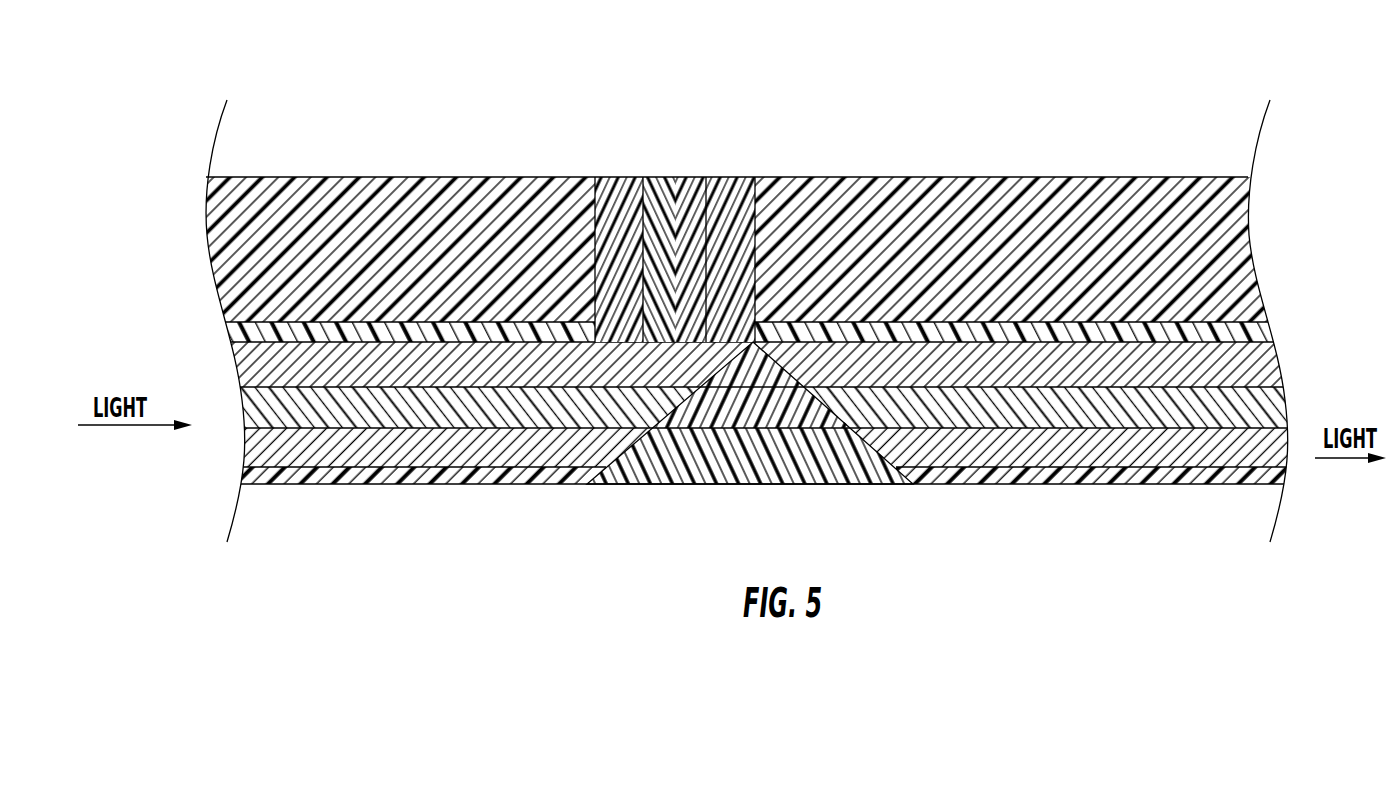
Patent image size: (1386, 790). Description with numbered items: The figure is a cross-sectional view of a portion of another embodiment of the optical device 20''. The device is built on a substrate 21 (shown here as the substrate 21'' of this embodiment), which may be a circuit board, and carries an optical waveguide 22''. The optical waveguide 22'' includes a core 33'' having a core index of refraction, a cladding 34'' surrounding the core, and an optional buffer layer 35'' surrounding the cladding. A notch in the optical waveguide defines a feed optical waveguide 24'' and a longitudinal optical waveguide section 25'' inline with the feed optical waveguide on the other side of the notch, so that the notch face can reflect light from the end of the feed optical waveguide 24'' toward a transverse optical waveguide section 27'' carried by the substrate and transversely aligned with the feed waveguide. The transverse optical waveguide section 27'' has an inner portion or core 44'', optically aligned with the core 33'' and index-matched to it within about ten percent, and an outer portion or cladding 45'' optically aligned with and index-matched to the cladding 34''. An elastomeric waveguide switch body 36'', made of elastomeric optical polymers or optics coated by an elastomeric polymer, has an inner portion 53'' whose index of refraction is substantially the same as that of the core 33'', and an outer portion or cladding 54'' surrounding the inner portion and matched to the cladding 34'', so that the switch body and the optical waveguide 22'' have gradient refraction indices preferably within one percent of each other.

The optical device 20'' is at (747, 284).
The substrate 21 is at (392, 218).
The substrate 21'' is at (1027, 218).
The optical waveguide 22'' is at (192, 321).
The feed optical waveguide 24'' is at (398, 495).
The longitudinal optical waveguide section 25'' is at (1098, 534).
The transverse optical waveguide section 27'' is at (698, 211).
The core 33'' is at (767, 407).
The cladding 34'' is at (767, 447).
The buffer layer 35'' is at (766, 453).
The elastomeric waveguide switch body 36'' is at (750, 452).
The transverse optical waveguide section inner portion 44'' is at (674, 214).
The transverse optical waveguide section outer portion 45'' is at (731, 224).
The elastomeric waveguide switch body inner portion 53'' is at (750, 447).
The elastomeric waveguide switch body outer portion 54'' is at (751, 447).